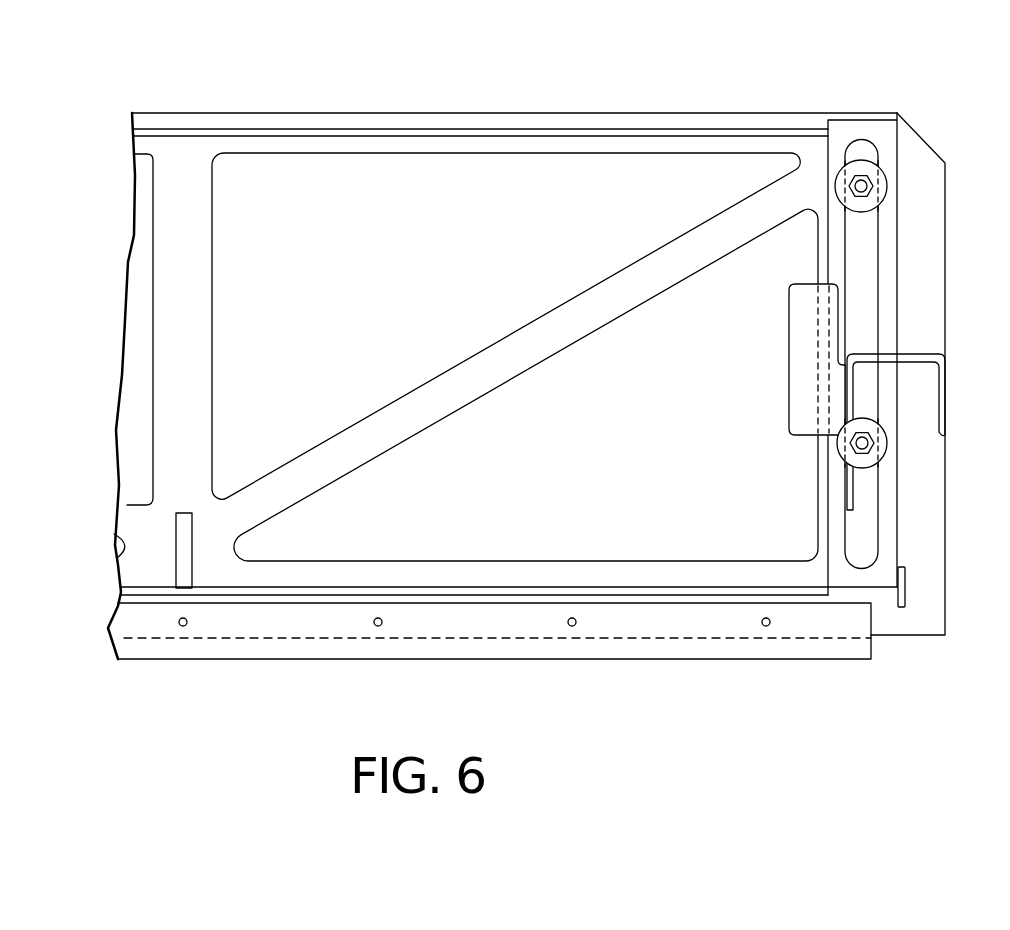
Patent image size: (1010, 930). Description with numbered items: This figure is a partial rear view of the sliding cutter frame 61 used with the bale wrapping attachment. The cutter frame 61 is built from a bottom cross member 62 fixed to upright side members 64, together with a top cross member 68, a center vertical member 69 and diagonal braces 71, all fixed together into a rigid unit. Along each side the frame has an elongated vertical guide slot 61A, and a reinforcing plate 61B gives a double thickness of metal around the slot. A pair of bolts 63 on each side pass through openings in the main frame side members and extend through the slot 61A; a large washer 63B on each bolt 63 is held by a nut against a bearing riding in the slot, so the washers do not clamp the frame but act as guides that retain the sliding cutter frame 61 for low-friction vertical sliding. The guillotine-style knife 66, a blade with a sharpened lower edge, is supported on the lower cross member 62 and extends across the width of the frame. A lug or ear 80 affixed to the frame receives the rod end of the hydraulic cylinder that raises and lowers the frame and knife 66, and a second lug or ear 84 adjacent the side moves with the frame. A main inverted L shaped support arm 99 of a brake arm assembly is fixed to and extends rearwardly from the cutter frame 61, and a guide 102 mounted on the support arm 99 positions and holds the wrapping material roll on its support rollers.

The sliding cutter frame 61 is at (650, 108).
The elongated vertical guide slot 61A is at (867, 310).
The reinforcing plate 61B is at (883, 133).
The bottom cross member 62 is at (484, 590).
The bolt 63 is at (847, 185).
The large washer 63B is at (885, 185).
The upright side member 64 is at (912, 283).
The guillotine-style knife 66 is at (667, 628).
The top cross member 68 is at (367, 153).
The center vertical member 69 is at (198, 370).
The diagonal brace 71 is at (423, 387).
The lug or ear 80 is at (193, 532).
The second lug or ear 84 is at (905, 590).
The main inverted L shaped support arm 99 is at (935, 378).
The guide 102 is at (847, 468).